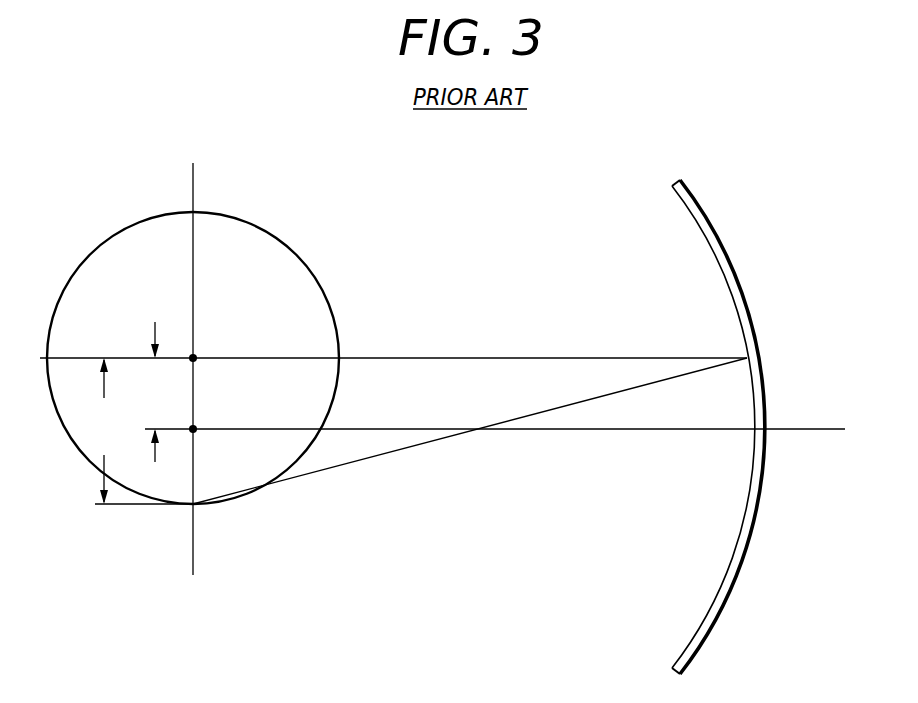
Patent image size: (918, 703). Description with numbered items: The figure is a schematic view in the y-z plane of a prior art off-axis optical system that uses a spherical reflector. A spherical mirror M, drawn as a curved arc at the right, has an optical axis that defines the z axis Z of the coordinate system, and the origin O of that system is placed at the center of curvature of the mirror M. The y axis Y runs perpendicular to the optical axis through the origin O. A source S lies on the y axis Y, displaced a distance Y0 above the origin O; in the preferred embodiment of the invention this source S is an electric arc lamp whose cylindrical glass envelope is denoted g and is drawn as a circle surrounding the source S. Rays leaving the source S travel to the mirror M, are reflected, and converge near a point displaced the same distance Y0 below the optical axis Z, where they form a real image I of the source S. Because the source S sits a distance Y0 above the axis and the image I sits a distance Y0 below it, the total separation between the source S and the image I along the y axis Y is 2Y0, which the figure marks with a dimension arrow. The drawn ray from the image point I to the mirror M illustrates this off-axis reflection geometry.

The glass envelope g is at (304, 264).
The spherical mirror M is at (721, 427).
The source S is at (393, 344).
The origin O is at (204, 416).
The real image I is at (470, 450).
The y axis Y is at (184, 356).
The z axis Z is at (495, 447).
The displacement distance y0 Y0 is at (154, 392).
The source-to-image separation 2y0 2Y0 is at (139, 431).